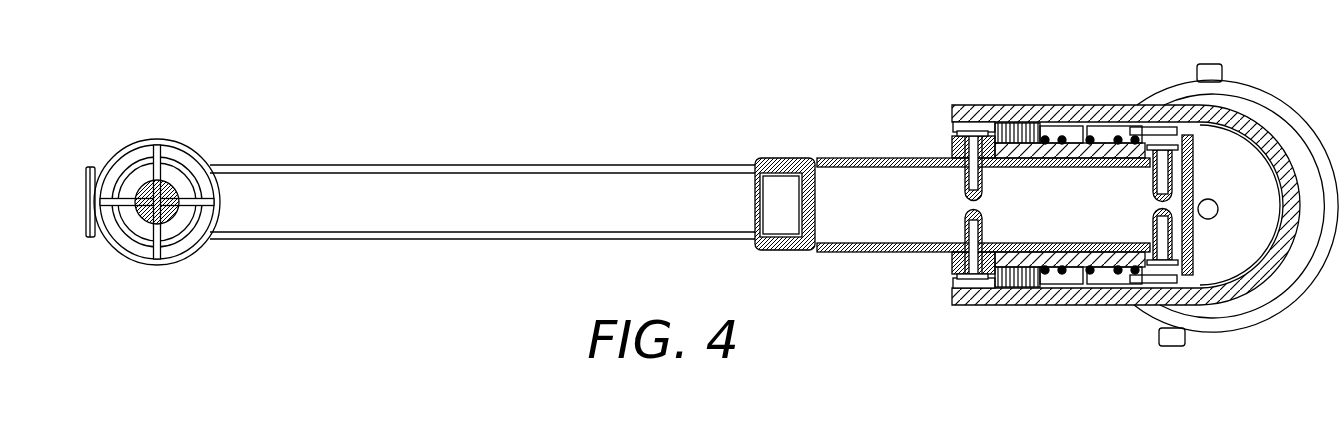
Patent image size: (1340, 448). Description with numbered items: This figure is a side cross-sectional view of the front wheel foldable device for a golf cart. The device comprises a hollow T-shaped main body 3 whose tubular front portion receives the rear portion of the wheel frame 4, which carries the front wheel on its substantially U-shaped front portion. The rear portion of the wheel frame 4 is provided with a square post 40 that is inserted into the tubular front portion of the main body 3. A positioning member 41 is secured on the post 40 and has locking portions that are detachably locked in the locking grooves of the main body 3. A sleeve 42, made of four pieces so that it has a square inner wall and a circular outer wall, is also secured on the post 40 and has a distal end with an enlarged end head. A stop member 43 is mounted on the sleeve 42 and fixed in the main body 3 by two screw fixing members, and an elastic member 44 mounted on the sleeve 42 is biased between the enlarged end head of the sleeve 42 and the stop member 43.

The main body 3 is at (1063, 112).
The wheel frame 4 is at (475, 222).
The square post 40 is at (873, 220).
The positioning member 41 is at (952, 260).
The sleeve 42 is at (1122, 272).
The stop member 43 is at (1017, 268).
The elastic member 44 is at (1077, 274).